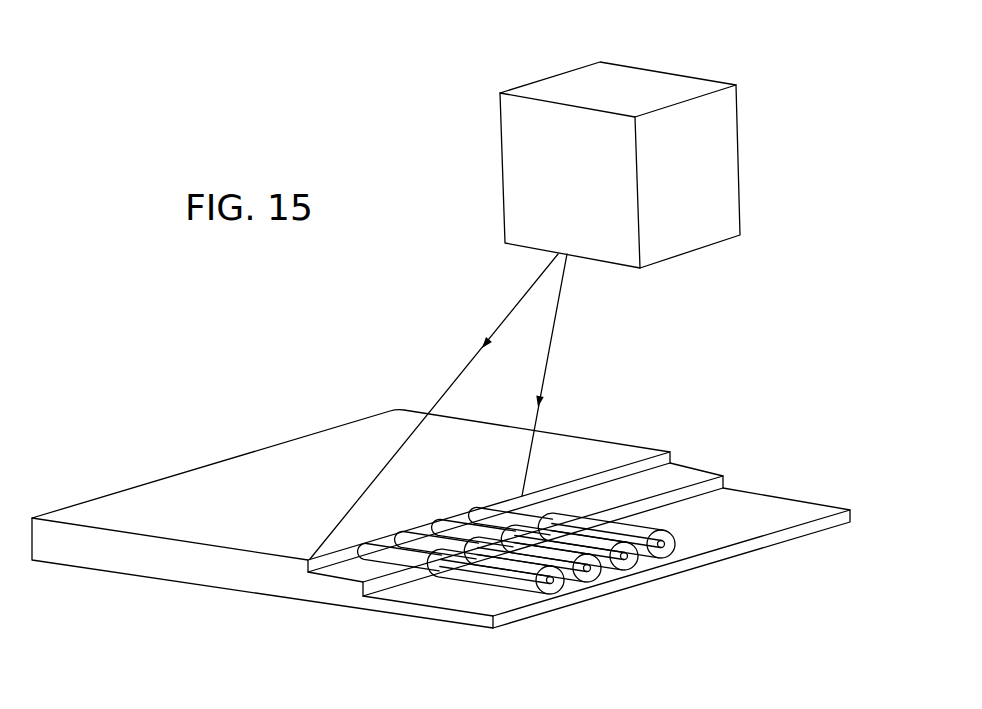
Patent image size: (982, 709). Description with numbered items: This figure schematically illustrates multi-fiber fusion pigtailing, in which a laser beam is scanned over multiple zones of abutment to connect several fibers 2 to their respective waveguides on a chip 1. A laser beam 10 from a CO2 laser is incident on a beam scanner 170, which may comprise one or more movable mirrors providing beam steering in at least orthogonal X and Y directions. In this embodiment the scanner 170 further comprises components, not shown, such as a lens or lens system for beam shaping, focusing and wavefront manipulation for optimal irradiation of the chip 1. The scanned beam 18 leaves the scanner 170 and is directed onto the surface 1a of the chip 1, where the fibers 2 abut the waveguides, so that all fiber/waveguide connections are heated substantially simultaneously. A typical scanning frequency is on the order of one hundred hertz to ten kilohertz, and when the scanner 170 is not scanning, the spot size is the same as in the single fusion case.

The beam scanner 170 is at (760, 136).
The laser beam 10 is at (740, 153).
The laser beam 18 is at (562, 361).
The chip 1 is at (126, 579).
The substrate surface 1a is at (280, 428).
The optical fiber 2 is at (576, 608).